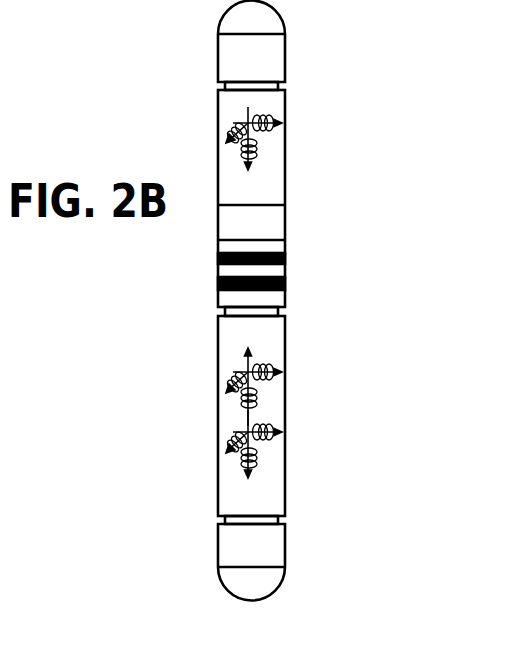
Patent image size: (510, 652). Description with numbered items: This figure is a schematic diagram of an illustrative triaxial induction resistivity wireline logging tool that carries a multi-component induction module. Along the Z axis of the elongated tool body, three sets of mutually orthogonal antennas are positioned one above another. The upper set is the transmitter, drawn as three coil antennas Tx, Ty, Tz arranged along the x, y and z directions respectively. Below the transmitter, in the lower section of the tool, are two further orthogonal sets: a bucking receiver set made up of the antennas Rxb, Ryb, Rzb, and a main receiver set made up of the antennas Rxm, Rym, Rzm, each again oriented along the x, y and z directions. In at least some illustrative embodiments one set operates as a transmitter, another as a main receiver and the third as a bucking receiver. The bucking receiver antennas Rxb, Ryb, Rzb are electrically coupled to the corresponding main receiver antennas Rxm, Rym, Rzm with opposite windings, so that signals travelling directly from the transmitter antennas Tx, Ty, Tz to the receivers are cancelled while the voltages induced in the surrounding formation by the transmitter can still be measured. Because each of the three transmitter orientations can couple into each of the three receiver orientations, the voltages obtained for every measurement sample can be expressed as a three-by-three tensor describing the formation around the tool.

The transmitter antenna (x axis) Tx is at (273, 122).
The transmitter antenna (y axis) Ty is at (228, 148).
The transmitter antenna (z axis) Tz is at (260, 149).
The bucking receiver antenna (x axis) Rxb is at (273, 374).
The bucking receiver antenna (y axis) Ryb is at (228, 398).
The bucking receiver antenna (z axis) Rzb is at (252, 370).
The main receiver antenna (x axis) Rxm is at (275, 436).
The main receiver antenna (y axis) Rym is at (228, 458).
The main receiver antenna (z axis) Rzm is at (255, 464).